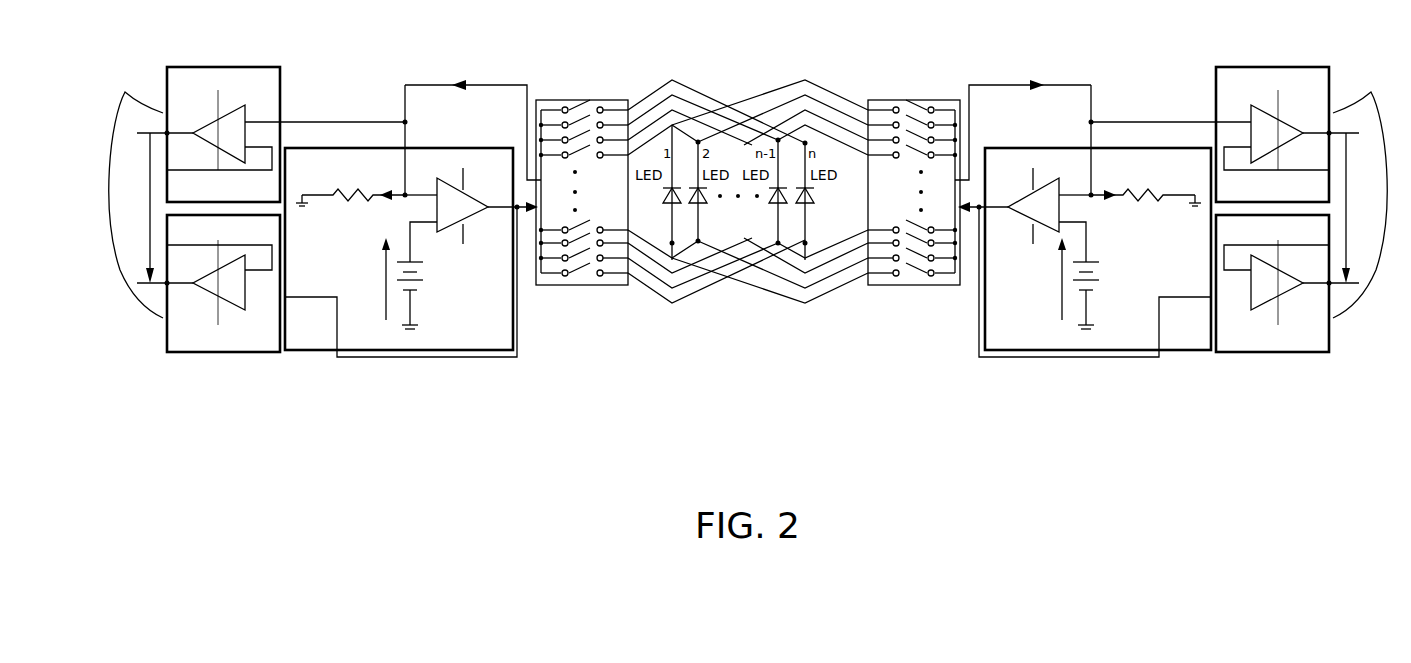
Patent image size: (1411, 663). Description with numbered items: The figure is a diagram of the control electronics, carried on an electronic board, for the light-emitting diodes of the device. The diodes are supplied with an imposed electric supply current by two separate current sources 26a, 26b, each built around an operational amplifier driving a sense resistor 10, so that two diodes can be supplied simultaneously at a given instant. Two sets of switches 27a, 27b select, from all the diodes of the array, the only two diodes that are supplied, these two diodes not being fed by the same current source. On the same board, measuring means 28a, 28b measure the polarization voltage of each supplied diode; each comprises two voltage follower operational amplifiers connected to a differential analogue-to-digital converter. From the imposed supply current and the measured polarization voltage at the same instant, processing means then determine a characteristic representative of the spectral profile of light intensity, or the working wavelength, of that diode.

The resistor 10 is at (346, 203).
The current source 26a is at (363, 145).
The current source 26b is at (1127, 145).
The set of switches 27a is at (583, 287).
The set of switches 27b is at (913, 287).
The means for measuring a polarization voltage 28a is at (204, 222).
The means for measuring a polarization voltage 28b is at (1264, 226).